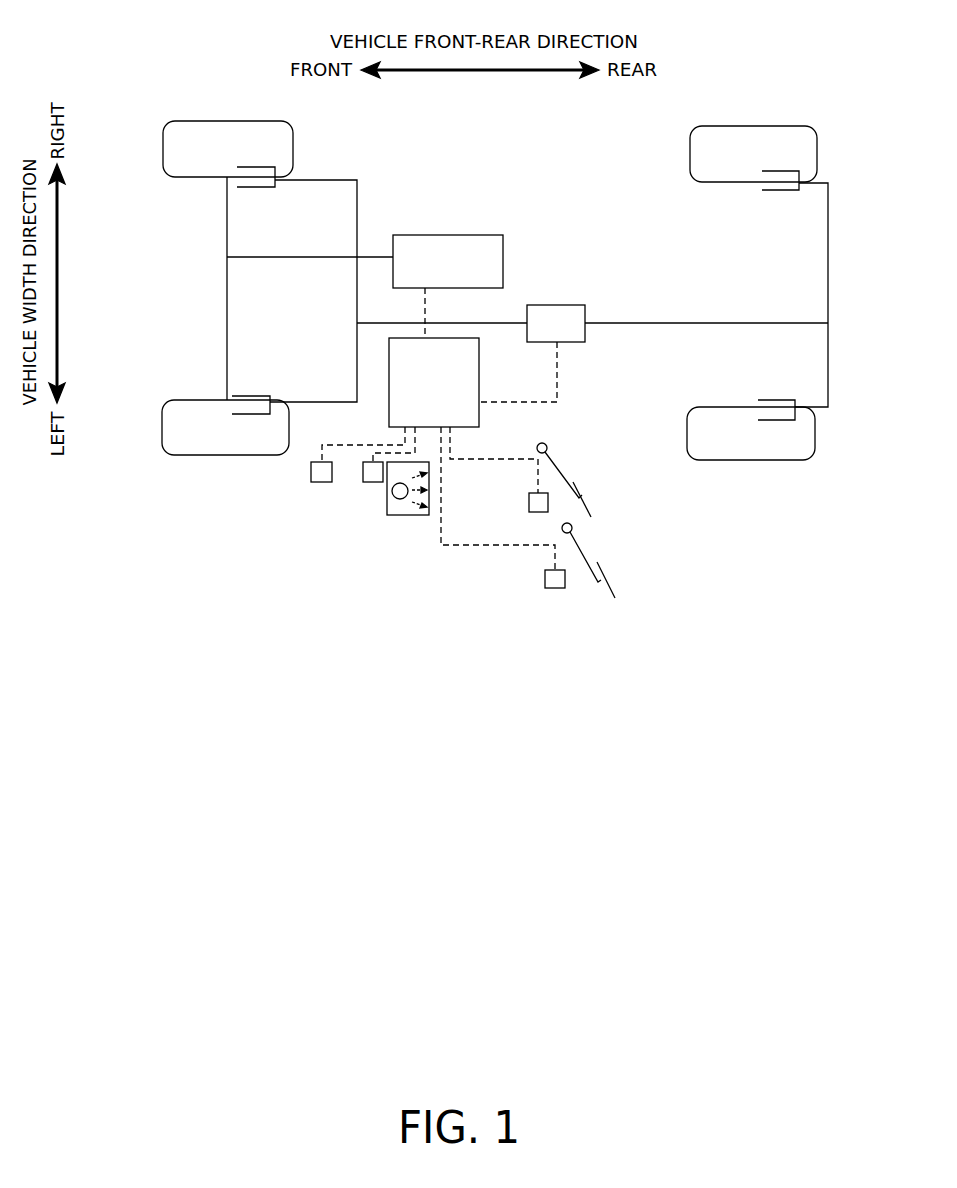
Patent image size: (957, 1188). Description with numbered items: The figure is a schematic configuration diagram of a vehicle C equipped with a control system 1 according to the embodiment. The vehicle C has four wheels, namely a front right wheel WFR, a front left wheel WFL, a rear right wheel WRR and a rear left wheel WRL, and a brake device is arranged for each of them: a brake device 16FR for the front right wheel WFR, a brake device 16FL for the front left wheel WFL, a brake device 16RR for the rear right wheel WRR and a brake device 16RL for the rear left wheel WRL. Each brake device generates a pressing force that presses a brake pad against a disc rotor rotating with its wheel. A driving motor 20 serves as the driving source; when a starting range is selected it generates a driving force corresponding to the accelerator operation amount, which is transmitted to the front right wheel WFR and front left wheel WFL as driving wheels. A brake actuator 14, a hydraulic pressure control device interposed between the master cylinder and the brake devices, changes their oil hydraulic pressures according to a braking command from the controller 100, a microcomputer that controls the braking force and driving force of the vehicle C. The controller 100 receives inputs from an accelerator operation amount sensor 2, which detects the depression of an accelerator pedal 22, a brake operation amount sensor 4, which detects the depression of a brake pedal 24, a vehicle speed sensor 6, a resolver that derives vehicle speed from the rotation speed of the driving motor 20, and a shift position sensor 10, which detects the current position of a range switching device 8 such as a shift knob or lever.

The control system 1 is at (482, 176).
The vehicle C is at (227, 61).
The accelerator operation amount sensor 2 is at (529, 505).
The brake operation amount sensor 4 is at (545, 585).
The vehicle speed sensor 6 is at (316, 483).
The range switching device 8 is at (400, 516).
The shift position sensor 10 is at (367, 483).
The brake actuator 14 is at (573, 305).
The brake device 16FR is at (276, 190).
The brake device 16FL is at (265, 391).
The brake device 16RR is at (788, 197).
The brake device 16RL is at (787, 394).
The driving motor 20 is at (450, 235).
The accelerator pedal 22 is at (564, 468).
The brake pedal 24 is at (592, 548).
The controller 100 is at (479, 373).
The front right wheel WFR is at (163, 138).
The front left wheel WFL is at (162, 438).
The rear right wheel WRR is at (817, 137).
The rear left wheel WRL is at (815, 448).